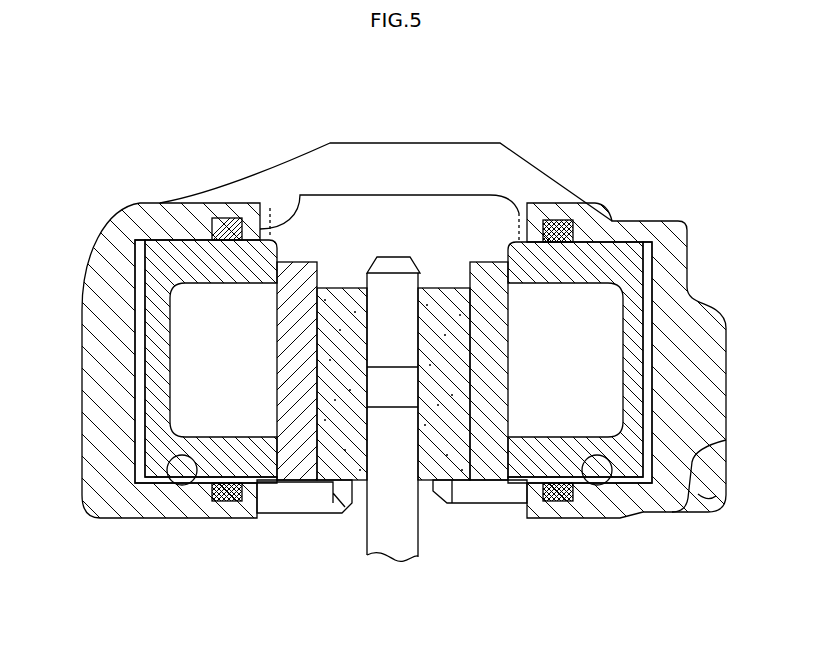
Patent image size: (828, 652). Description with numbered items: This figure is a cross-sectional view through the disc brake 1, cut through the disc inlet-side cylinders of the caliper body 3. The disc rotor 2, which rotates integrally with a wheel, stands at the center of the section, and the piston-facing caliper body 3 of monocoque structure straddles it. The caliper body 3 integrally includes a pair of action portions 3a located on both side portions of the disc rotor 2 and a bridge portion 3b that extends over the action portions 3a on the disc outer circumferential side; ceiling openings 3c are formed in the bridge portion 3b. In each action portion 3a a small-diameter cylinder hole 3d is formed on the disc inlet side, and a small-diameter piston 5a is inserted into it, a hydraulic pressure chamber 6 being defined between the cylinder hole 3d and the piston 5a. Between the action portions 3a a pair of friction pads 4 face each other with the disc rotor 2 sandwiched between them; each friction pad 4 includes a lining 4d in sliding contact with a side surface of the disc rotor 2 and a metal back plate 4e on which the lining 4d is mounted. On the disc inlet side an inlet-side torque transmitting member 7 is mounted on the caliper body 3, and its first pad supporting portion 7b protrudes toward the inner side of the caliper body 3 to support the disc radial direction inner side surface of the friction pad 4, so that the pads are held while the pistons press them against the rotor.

The disc brake 1 is at (385, 86).
The disc rotor 2 is at (390, 547).
The caliper body 3 is at (530, 147).
The action portion 3a is at (123, 503).
The bridge portion 3b is at (356, 157).
The ceiling opening 3c is at (280, 229).
The small-diameter cylinder hole 3d is at (183, 486).
The friction pad 4 is at (414, 326).
The lining 4d is at (325, 373).
The metal back plate 4e is at (297, 402).
The small-diameter piston 5a is at (160, 333).
The hydraulic pressure chamber 6 is at (140, 403).
The inlet-side torque transmitting member 7 is at (392, 532).
The first pad supporting portion 7b is at (293, 493).